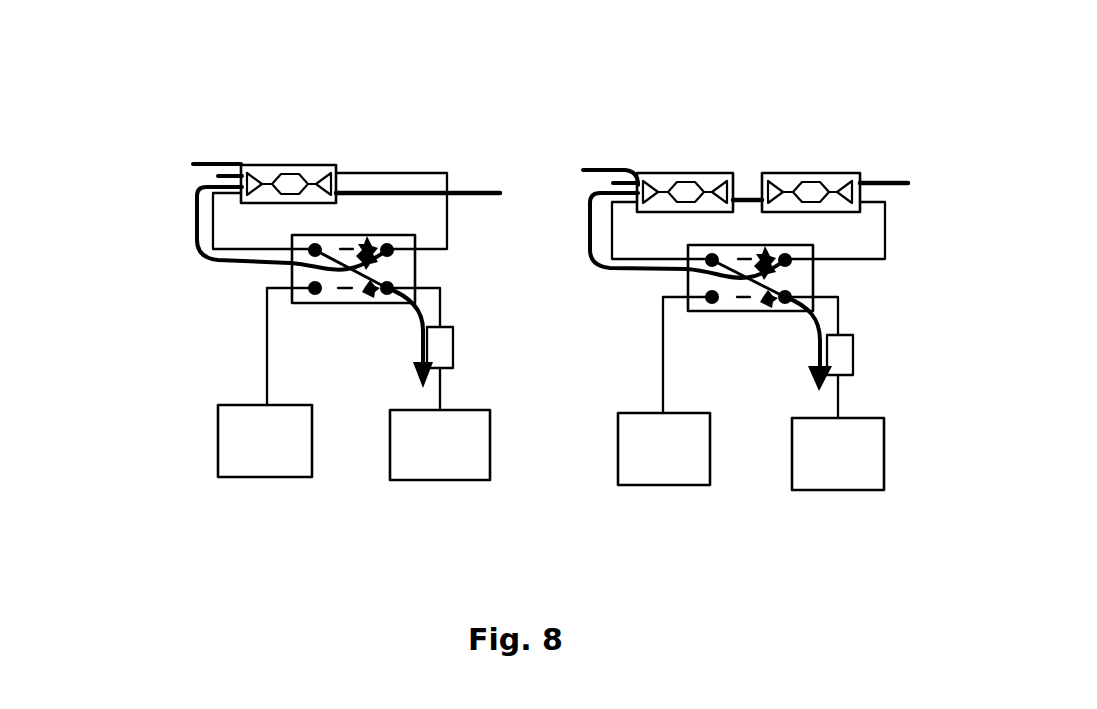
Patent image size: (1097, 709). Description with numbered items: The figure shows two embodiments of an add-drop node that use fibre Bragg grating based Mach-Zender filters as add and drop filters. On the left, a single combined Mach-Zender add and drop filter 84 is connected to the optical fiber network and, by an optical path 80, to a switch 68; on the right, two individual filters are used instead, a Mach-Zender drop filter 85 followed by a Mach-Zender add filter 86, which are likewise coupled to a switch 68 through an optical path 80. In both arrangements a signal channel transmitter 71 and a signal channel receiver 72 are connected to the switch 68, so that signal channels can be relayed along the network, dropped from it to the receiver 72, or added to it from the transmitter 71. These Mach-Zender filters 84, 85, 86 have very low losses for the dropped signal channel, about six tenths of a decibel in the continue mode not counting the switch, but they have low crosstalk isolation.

The switch 68 is at (292, 269).
The signal channel transmitter 71 is at (218, 427).
The signal channel receiver 72 is at (390, 447).
The optical fiber 80 is at (193, 163).
The combined Mach-Zender add and drop filter 84 is at (287, 163).
The Mach-Zender drop filter 85 is at (671, 172).
The Mach-Zender add filter 86 is at (838, 170).